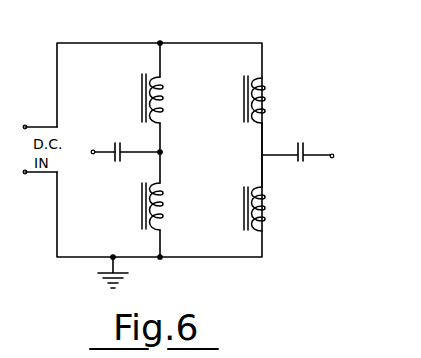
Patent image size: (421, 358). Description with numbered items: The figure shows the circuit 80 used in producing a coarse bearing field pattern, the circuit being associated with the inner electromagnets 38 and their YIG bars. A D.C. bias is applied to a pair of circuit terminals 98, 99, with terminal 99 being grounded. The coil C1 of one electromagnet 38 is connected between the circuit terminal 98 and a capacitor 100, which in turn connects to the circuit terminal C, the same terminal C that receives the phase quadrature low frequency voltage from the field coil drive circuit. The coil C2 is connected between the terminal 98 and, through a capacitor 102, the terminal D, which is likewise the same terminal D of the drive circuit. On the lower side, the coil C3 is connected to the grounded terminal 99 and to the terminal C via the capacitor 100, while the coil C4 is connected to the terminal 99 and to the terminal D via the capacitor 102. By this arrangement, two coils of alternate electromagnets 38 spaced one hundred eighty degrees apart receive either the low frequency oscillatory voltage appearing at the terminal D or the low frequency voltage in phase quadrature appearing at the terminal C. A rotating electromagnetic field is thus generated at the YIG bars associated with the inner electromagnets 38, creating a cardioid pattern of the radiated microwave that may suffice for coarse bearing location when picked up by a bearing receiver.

The circuit terminal 98 is at (24, 125).
The circuit terminal 99 is at (25, 175).
The terminal C is at (96, 149).
The capacitor 100 is at (118, 161).
The inner electromagnet 38 is at (140, 203).
The coil C1 is at (163, 89).
The coil C2 is at (265, 89).
The coil C3 is at (163, 196).
The coil C4 is at (265, 199).
The capacitor 102 is at (305, 153).
The terminal D is at (334, 156).
The circuit 80 is at (273, 248).